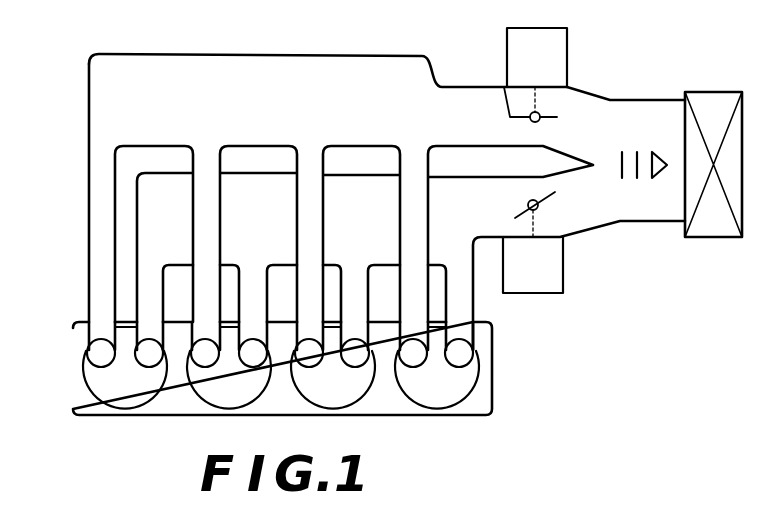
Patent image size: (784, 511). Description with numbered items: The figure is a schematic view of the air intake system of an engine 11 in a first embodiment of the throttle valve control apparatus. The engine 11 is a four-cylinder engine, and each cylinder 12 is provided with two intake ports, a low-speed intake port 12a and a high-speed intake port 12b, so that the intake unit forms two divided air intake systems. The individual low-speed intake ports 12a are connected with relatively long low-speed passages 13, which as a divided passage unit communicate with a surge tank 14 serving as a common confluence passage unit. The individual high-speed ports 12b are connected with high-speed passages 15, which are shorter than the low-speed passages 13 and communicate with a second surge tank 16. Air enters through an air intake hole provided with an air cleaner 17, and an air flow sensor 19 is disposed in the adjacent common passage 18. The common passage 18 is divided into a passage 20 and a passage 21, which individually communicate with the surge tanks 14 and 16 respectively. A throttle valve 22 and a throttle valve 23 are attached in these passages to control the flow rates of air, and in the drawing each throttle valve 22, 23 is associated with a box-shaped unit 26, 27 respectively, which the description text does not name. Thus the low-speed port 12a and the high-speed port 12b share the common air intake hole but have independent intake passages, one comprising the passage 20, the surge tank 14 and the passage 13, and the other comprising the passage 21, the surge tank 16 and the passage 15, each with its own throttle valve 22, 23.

The engine 11 is at (160, 408).
The cylinder 12 is at (123, 405).
The low-speed intake port 12a is at (93, 350).
The high-speed intake port 12b is at (138, 360).
The low-speed passage 13 is at (91, 256).
The surge tank 14 is at (265, 69).
The high-speed passage 15 is at (140, 282).
The surge tank 16 is at (291, 184).
The air cleaner 17 is at (710, 235).
The common passage 18 is at (612, 232).
The air flow sensor 19 is at (635, 150).
The passage 20 is at (585, 105).
The passage 21 is at (573, 222).
The throttle valve 22 is at (507, 84).
The throttle valve 23 is at (520, 212).
The first actuator 26 is at (565, 44).
The second actuator 27 is at (537, 288).